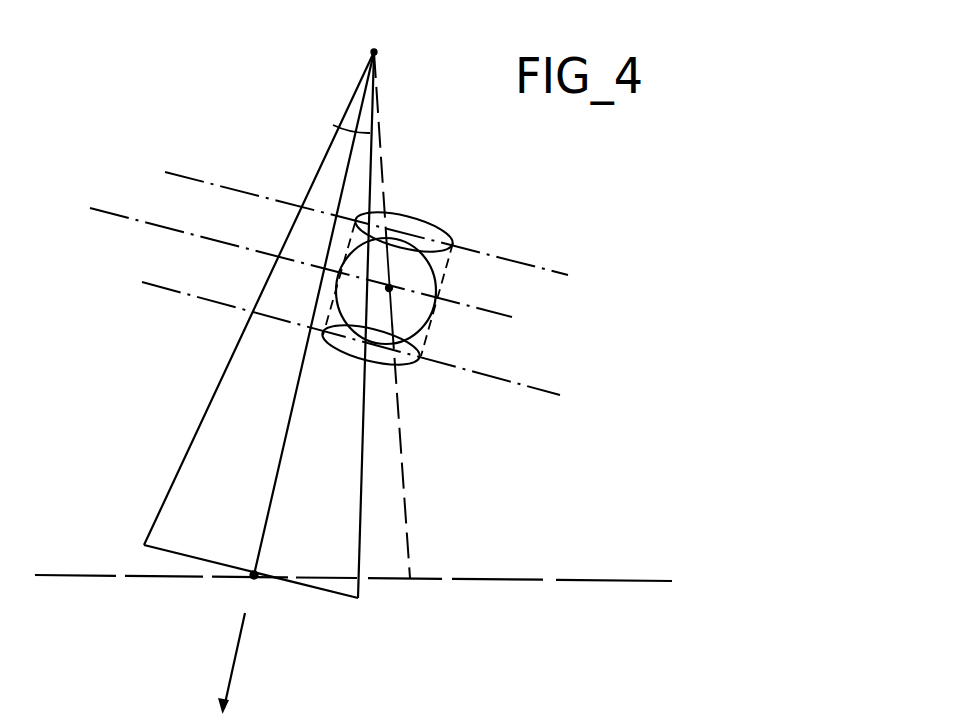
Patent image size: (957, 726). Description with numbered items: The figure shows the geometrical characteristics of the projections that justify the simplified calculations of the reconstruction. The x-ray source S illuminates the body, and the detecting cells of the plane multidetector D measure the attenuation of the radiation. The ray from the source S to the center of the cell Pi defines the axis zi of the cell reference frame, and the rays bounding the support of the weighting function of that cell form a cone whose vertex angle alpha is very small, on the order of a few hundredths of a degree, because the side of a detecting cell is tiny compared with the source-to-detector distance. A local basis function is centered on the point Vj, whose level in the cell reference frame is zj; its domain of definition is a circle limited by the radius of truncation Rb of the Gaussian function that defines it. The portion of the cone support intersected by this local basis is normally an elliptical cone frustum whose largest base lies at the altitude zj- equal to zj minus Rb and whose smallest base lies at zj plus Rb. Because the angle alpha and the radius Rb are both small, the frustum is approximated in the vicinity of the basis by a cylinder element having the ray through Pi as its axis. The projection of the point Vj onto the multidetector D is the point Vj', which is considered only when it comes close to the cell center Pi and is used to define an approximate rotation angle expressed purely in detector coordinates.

The source S is at (378, 51).
The angle at the vertex of the cone alpha is at (363, 131).
The point on which the basis function is centered Vj is at (403, 288).
The radius of truncation Rb is at (392, 288).
The projection of Vj on the detector Vj' is at (410, 315).
The multidetector D is at (579, 580).
The center of the cell i Pi is at (254, 575).
The z axis of the cell reference frame zi is at (237, 666).
The level of the point Vj zj is at (298, 248).
The altitude zj minus Rb zj- is at (427, 233).